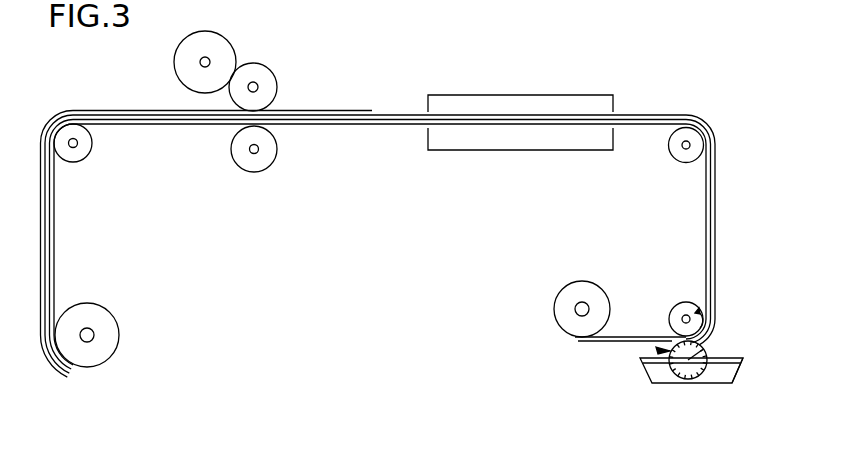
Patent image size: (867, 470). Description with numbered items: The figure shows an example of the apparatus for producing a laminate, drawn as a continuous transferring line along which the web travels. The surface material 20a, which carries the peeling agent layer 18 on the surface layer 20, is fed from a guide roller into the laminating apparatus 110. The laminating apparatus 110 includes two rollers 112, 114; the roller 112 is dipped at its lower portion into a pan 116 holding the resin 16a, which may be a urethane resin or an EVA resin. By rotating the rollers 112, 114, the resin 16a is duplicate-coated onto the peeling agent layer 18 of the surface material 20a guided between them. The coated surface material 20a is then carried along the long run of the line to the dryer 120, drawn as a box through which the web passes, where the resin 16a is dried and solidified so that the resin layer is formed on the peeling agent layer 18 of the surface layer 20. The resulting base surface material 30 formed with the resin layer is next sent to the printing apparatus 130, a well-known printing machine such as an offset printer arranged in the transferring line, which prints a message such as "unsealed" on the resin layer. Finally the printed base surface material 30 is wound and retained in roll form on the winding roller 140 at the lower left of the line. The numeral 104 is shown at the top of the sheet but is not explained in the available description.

The base surface material 30 is at (373, 114).
The resin 16a is at (716, 192).
The printing apparatus 130 is at (245, 56).
The web 104 is at (254, 31).
The dryer 120 is at (533, 95).
The winding roller 140 is at (88, 329).
The surface material 20a is at (572, 293).
The surface layer 20 is at (635, 336).
The roller 114 is at (684, 314).
The peeling agent layer 18 is at (620, 343).
The laminating apparatus 110 is at (668, 387).
The roller 112 is at (690, 374).
The pan 116 is at (727, 386).